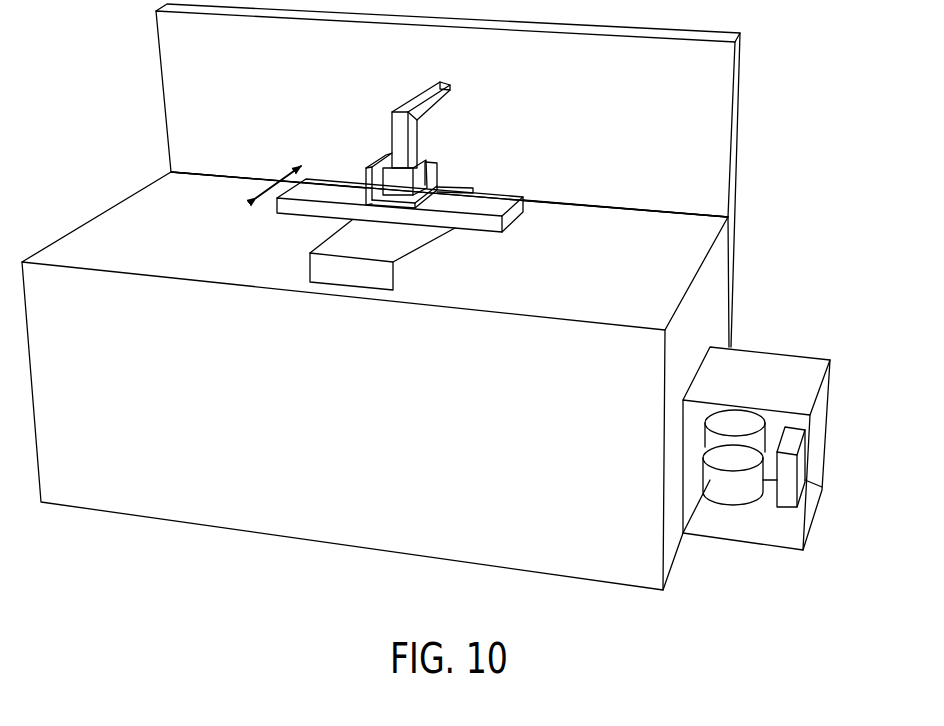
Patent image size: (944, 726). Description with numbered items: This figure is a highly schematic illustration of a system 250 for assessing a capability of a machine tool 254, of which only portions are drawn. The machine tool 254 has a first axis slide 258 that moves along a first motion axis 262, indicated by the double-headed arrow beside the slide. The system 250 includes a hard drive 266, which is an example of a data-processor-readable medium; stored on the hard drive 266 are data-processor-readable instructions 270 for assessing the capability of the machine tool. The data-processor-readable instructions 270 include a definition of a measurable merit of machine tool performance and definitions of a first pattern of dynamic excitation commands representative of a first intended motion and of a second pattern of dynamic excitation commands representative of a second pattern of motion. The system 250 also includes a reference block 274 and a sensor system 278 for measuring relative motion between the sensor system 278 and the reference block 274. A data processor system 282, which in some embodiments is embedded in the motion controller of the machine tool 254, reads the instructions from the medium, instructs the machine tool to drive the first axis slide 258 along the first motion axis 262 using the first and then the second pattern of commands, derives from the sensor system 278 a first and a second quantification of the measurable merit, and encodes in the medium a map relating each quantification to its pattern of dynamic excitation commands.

The system 250 is at (768, 279).
The machine tool 254 is at (163, 90).
The first axis slide 258 is at (292, 217).
The first motion axis 262 is at (284, 177).
The hard drive 266 is at (752, 408).
The data-processor-readable instructions 270 is at (732, 465).
The reference block 274 is at (427, 163).
The sensor system 278 is at (450, 185).
The data processor system 282 is at (807, 467).